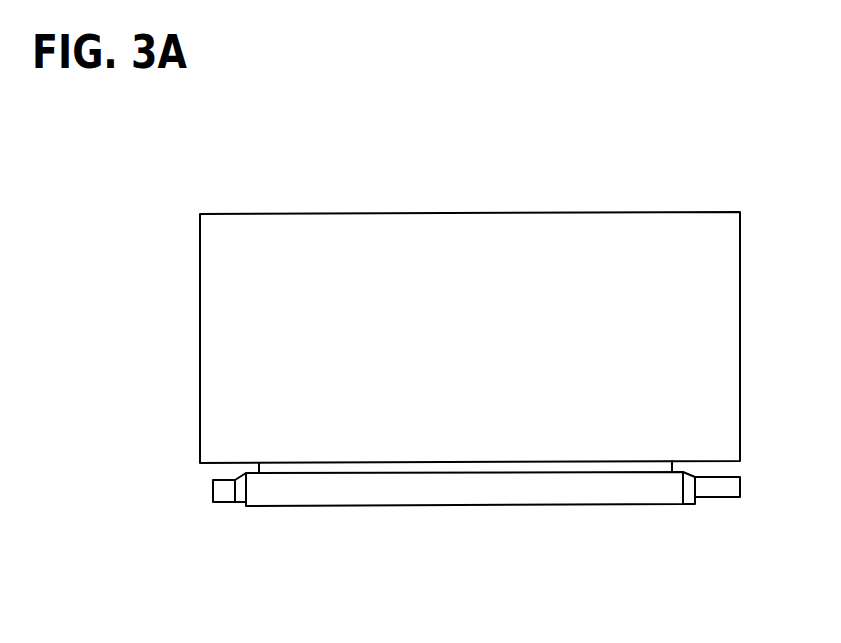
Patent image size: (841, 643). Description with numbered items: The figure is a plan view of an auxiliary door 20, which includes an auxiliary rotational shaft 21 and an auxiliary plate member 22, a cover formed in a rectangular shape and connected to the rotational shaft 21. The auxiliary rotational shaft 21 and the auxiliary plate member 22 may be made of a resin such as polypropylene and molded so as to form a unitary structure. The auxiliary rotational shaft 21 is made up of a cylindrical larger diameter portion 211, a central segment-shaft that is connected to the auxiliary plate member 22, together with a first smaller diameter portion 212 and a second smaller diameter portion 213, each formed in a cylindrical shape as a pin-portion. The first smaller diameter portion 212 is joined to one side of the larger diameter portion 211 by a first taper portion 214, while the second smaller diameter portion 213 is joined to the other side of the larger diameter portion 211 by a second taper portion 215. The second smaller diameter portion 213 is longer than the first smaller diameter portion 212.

The auxiliary door 20 is at (670, 165).
The auxiliary rotational shaft 21 is at (340, 507).
The auxiliary plate member 22 is at (446, 225).
The larger diameter portion 211 is at (469, 493).
The first smaller diameter portion 212 is at (219, 494).
The second smaller diameter portion 213 is at (723, 490).
The first taper portion 214 is at (242, 494).
The second taper portion 215 is at (690, 490).